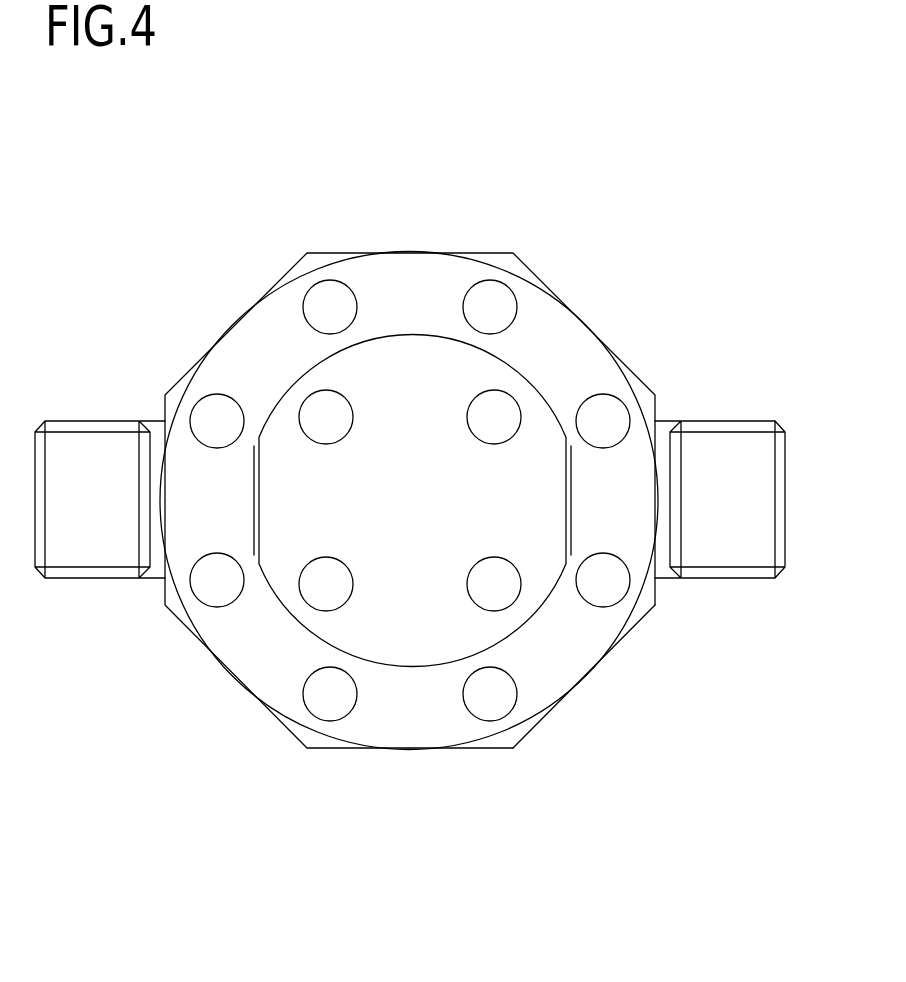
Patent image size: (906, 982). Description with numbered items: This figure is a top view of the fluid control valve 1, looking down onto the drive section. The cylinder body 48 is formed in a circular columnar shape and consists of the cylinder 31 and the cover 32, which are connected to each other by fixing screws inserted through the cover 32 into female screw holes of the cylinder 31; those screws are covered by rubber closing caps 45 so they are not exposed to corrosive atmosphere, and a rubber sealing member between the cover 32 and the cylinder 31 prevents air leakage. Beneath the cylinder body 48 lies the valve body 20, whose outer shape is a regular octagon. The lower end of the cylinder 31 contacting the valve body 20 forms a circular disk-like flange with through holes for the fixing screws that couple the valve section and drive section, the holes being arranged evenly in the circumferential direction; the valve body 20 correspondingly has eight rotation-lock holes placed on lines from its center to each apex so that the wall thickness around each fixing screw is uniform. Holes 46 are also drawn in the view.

The fluid control valve 1 is at (661, 204).
The valve body 20 is at (347, 750).
The cylinder 31 is at (448, 277).
The cover 32 is at (407, 362).
The rubber closing cap 45 is at (326, 421).
The bolt hole 46 is at (323, 305).
The cylinder body 48 is at (546, 722).